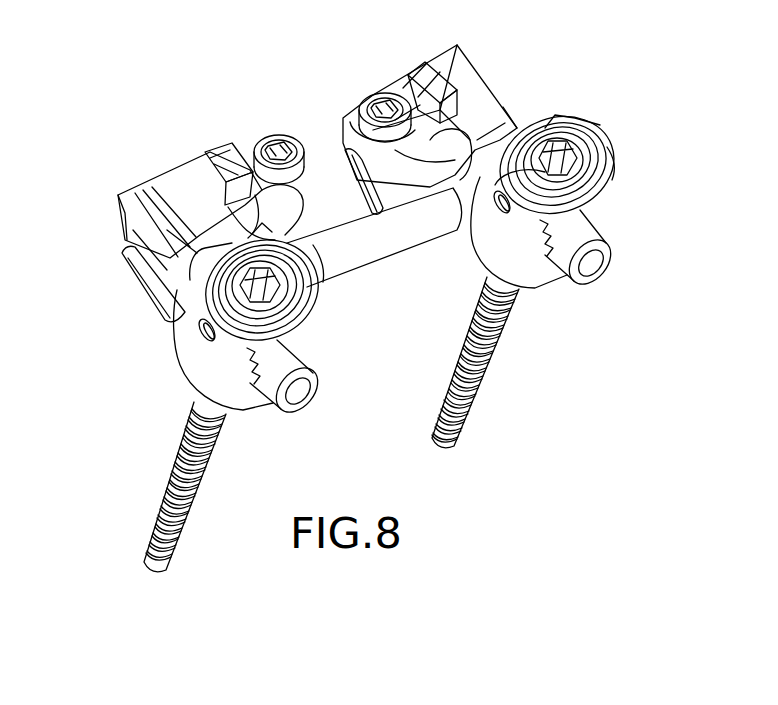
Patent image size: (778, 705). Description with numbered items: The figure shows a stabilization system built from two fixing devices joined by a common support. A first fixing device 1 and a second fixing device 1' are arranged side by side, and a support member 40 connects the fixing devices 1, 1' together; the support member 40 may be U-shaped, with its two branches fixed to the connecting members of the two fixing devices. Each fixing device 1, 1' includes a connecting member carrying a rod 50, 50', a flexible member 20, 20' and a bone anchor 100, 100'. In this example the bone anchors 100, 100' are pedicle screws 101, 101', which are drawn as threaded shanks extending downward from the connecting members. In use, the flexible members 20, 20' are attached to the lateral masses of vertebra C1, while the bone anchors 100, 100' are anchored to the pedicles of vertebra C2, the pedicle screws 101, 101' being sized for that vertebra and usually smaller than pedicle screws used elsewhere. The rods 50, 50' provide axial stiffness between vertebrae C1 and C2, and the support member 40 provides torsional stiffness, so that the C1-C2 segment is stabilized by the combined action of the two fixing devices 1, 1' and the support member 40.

The first fixing device 1 is at (211, 176).
The second fixing device 1' is at (430, 93).
The flexible member 20 is at (136, 284).
The flexible member 20' is at (351, 181).
The support member 40 is at (394, 243).
The rod 50 is at (302, 380).
The rod 50' is at (600, 251).
The bone anchor 100 is at (150, 487).
The pedicle screw 101 is at (185, 484).
The bone anchor 100' is at (531, 362).
The pedicle screw 101' is at (475, 362).